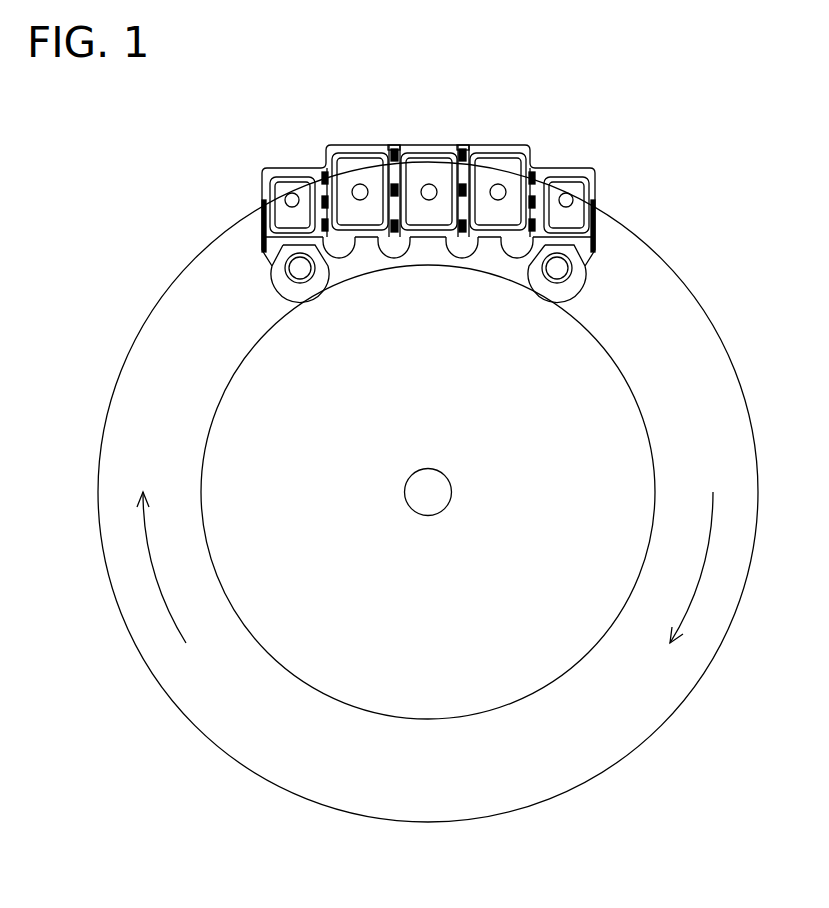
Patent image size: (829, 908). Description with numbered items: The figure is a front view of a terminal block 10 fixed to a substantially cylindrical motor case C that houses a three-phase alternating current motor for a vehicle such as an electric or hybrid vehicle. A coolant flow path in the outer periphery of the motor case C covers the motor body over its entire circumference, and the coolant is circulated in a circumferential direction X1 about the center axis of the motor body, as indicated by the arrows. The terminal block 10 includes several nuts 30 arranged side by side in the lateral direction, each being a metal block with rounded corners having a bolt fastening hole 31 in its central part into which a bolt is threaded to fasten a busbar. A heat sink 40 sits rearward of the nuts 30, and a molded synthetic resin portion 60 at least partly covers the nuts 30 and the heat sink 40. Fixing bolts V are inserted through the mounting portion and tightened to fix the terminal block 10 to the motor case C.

The terminal block 10 is at (405, 165).
The nut 30 is at (297, 194).
The bolt fastening hole 31 is at (435, 186).
The heat sink 40 is at (260, 262).
The molded synthetic resin portion 60 is at (598, 182).
The fixing bolt V is at (574, 266).
The motor case C is at (702, 345).
The circumferential direction X1 is at (150, 560).